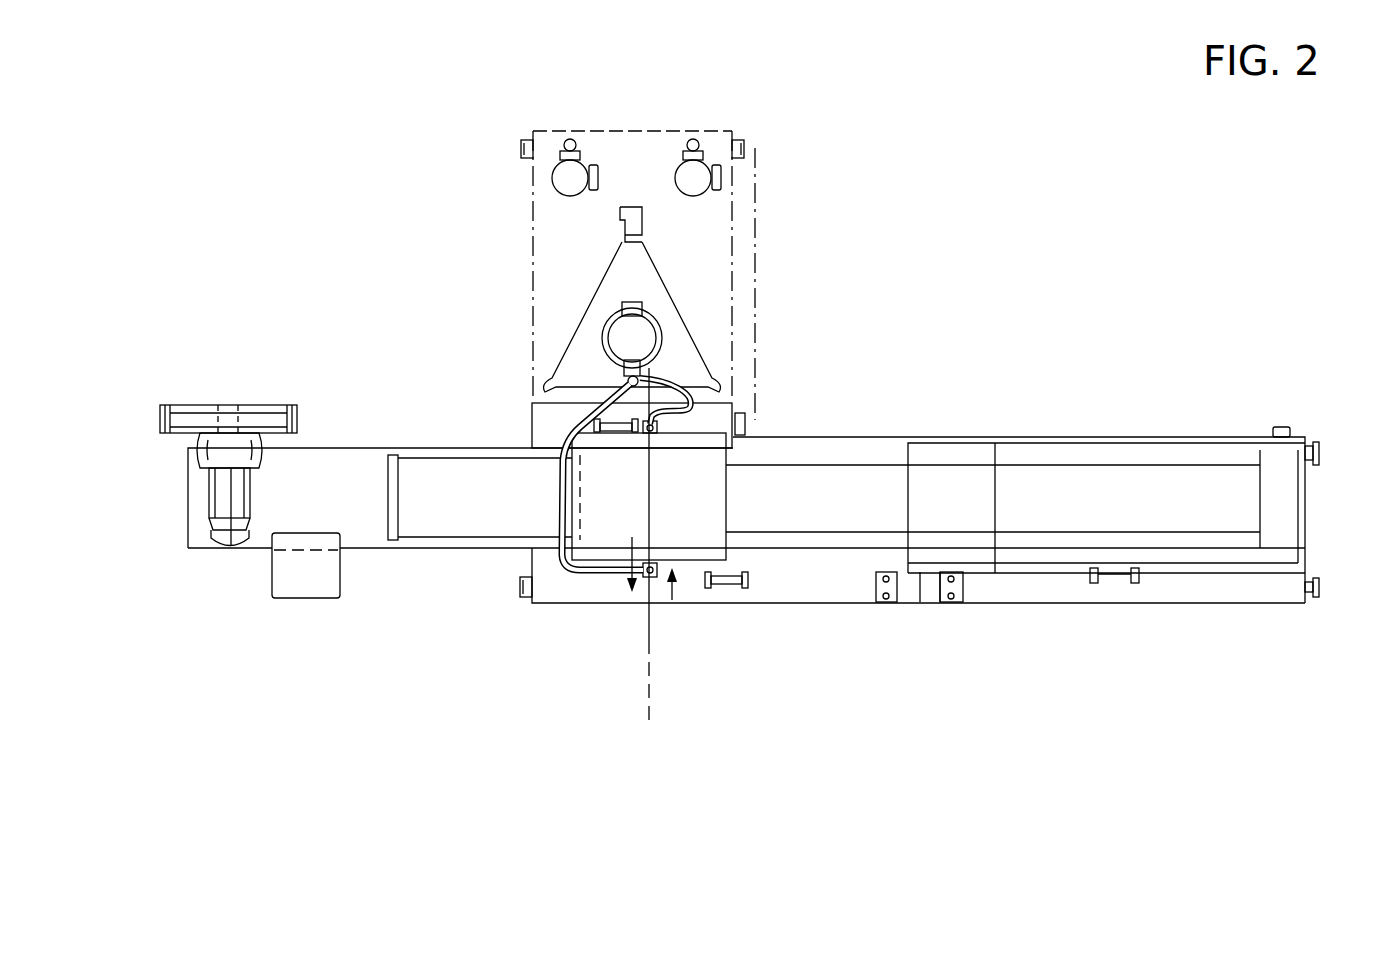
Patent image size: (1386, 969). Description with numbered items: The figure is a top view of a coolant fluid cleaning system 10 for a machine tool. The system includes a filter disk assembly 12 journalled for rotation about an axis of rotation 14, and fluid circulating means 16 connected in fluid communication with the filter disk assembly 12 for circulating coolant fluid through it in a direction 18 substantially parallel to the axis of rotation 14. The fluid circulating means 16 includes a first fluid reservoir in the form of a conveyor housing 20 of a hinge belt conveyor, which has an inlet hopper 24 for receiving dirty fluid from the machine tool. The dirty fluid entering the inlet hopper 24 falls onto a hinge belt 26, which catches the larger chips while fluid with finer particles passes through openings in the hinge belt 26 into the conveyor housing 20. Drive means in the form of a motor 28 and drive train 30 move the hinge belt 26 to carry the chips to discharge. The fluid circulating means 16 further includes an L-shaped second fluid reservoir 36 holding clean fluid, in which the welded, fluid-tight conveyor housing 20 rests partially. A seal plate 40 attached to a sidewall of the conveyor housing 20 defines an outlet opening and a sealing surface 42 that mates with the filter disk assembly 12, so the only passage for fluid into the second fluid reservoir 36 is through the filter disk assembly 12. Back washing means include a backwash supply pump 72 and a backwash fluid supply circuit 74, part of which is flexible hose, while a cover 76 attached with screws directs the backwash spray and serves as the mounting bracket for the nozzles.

The coolant fluid cleaning system 10 is at (1058, 208).
The filter disk assembly 12 is at (672, 600).
The axis of rotation 14 is at (649, 685).
The fluid circulating means 16 is at (1000, 620).
The direction 18 is at (632, 552).
The conveyor housing 20 is at (848, 445).
The inlet hopper 24 is at (1146, 477).
The hinge belt 26 is at (1080, 506).
The motor 28 is at (210, 505).
The drive train 30 is at (258, 405).
The second fluid reservoir 36 is at (662, 131).
The seal plate 40 is at (832, 549).
The sealing surface 42 is at (785, 549).
The backwash supply pump 72 is at (652, 320).
The backwash fluid supply circuit 74 is at (567, 553).
The cover 76 is at (700, 516).